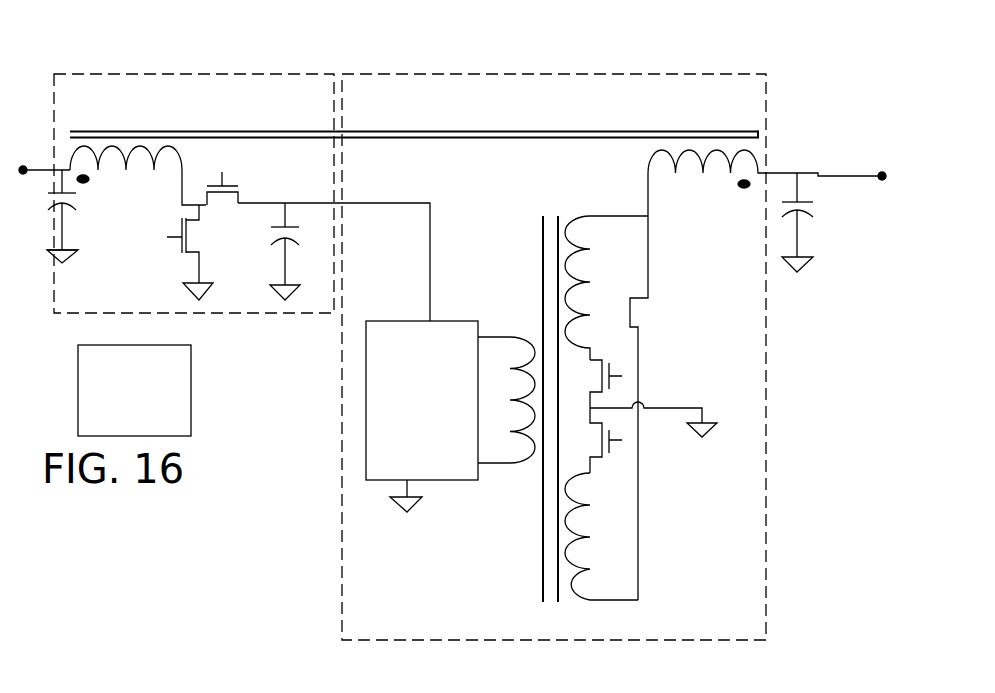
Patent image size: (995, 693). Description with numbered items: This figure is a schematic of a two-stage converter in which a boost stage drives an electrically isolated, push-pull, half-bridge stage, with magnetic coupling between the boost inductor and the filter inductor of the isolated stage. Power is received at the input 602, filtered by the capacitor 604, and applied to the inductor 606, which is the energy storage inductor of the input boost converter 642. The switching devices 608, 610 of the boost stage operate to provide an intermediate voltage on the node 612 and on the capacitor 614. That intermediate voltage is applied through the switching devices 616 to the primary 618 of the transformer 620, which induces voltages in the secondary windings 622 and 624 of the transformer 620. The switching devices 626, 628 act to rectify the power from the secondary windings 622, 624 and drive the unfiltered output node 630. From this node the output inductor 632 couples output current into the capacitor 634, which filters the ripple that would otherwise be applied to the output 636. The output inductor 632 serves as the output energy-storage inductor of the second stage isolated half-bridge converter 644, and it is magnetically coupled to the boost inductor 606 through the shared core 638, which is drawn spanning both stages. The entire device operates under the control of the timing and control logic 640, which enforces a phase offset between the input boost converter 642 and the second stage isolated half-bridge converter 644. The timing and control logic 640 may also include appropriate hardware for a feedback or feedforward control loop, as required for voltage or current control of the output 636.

The input 602 is at (44, 157).
The capacitor 604 is at (67, 203).
The inductor 606 is at (117, 148).
The switching device 608 is at (182, 258).
The switching device 610 is at (237, 185).
The node 612 is at (334, 252).
The capacitor 614 is at (272, 247).
The switching devices 616 is at (422, 416).
The primary 618 is at (520, 463).
The transformer 620 is at (542, 543).
The secondary winding 622 is at (590, 520).
The secondary winding 624 is at (587, 283).
The switching device 626 is at (613, 457).
The switching device 628 is at (610, 362).
The unfiltered output node 630 is at (646, 260).
The output inductor 632 is at (758, 170).
The capacitor 634 is at (811, 218).
The output 636 is at (882, 176).
The core 638 is at (527, 138).
The timing and control logic 640 is at (134, 390).
The input boost converter 642 is at (237, 85).
The second stage isolated half-bridge converter 644 is at (748, 622).